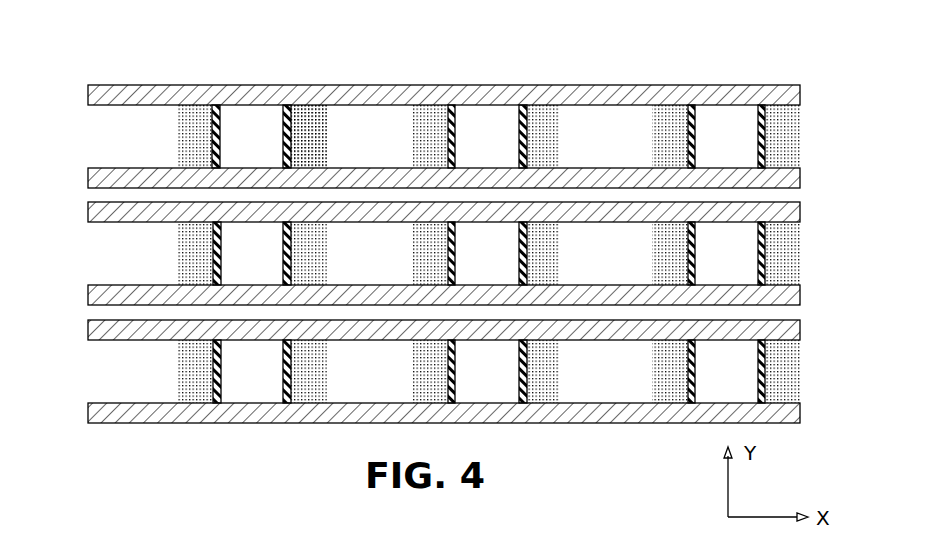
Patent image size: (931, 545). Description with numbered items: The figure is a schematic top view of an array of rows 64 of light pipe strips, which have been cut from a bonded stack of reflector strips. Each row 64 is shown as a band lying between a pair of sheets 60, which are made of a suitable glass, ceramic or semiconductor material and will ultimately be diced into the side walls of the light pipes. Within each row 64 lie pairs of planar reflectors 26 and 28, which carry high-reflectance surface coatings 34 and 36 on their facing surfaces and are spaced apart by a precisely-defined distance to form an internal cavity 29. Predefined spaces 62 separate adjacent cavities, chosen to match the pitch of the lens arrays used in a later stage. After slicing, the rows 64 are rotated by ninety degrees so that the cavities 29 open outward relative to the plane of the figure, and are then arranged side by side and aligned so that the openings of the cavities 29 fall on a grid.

The planar reflector 26 is at (198, 123).
The planar reflector 28 is at (310, 122).
The internal cavity 29 is at (268, 149).
The reflective surface coating 34 is at (218, 123).
The reflective surface coating 36 is at (287, 121).
The sheet 60 is at (88, 91).
The space 62 is at (392, 143).
The row 64 is at (786, 138).